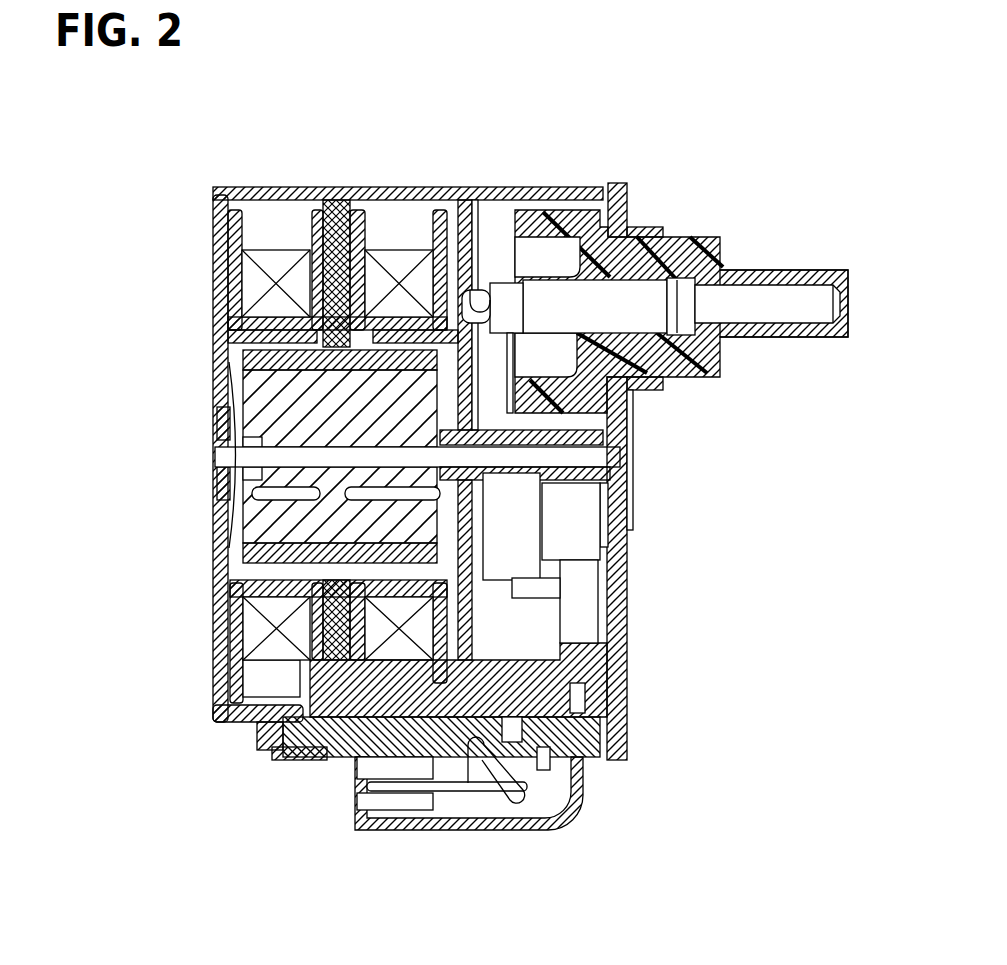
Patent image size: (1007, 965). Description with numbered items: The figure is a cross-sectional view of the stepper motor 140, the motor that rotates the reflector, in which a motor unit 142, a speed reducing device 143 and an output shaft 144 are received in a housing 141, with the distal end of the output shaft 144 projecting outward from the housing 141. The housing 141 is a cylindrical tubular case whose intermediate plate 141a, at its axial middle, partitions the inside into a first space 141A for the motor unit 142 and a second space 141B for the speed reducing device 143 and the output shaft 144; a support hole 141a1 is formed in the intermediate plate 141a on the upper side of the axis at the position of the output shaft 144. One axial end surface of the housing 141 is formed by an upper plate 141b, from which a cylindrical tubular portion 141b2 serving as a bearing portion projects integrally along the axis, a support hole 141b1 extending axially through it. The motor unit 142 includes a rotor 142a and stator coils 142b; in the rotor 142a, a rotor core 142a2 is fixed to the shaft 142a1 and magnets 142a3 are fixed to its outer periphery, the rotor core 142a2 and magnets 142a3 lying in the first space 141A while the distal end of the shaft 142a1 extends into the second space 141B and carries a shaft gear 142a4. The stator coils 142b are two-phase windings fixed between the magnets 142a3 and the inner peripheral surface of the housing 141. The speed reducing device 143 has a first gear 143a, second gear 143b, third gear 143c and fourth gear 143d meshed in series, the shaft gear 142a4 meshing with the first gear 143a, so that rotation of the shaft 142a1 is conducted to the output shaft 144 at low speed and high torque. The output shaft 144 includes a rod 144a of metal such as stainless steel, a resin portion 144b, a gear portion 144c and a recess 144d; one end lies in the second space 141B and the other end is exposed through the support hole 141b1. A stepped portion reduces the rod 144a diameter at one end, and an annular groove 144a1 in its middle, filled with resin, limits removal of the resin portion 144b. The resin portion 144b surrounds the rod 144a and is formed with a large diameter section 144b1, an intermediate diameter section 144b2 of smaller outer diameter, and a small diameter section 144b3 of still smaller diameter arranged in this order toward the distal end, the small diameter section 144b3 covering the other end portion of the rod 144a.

The stepper motor 140 is at (396, 147).
The housing 141 is at (327, 172).
The first space 141A is at (270, 220).
The second space 141B is at (483, 187).
The intermediate plate 141a is at (495, 200).
The support hole 141a1 is at (492, 278).
The upper plate 141b is at (643, 208).
The support hole 141b1 is at (668, 237).
The cylindrical tubular portion 141b2 is at (653, 237).
The motor unit 142 is at (213, 352).
The rotor 142a is at (250, 405).
The shaft 142a1 is at (240, 457).
The rotor core 142a2 is at (320, 520).
The magnets 142a3 is at (277, 555).
The shaft gear 142a4 is at (587, 477).
The stator coils 142b is at (367, 297).
The speed reducing device 143 is at (610, 493).
The first gear 143a is at (567, 527).
The second gear 143b is at (573, 580).
The third gear 143c is at (490, 397).
The fourth gear 143d is at (540, 423).
The output shaft 144 is at (790, 262).
The rod 144a is at (740, 313).
The groove 144a1 is at (673, 298).
The resin portion 144b is at (707, 367).
The large diameter section 144b1 is at (611, 198).
The intermediate diameter section 144b2 is at (712, 238).
The small diameter section 144b3 is at (807, 270).
The gear portion 144c is at (577, 200).
The recess 144d is at (572, 266).